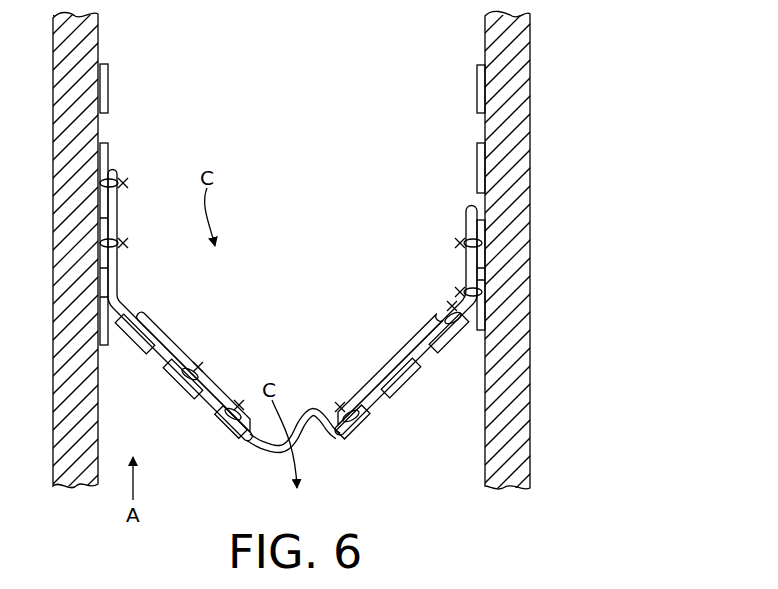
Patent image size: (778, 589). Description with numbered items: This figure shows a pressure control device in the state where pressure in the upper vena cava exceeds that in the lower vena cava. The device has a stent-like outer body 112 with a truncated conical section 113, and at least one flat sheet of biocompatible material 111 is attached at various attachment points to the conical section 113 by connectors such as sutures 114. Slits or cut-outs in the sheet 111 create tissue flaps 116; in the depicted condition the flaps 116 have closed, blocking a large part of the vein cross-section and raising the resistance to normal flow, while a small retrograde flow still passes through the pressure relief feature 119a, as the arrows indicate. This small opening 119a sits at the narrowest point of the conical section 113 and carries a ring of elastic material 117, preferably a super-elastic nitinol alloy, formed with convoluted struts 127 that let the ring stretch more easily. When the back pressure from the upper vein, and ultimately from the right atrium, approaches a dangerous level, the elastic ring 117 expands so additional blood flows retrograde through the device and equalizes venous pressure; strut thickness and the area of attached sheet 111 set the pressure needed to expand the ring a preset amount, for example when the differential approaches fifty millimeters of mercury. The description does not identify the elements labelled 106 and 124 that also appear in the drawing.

The wall panel 106 is at (568, 88).
The conical section 113 is at (560, 200).
The stent-like outer body 112 is at (477, 92).
The sheet of biocompatible material 111 is at (481, 318).
The sutures 114 is at (123, 184).
The tissue flaps 116 is at (150, 321).
The convoluted struts 127 is at (309, 409).
The ring of elastic material 117 is at (278, 452).
The pressure relief feature 119a is at (262, 441).
The right connector end 124 is at (338, 441).